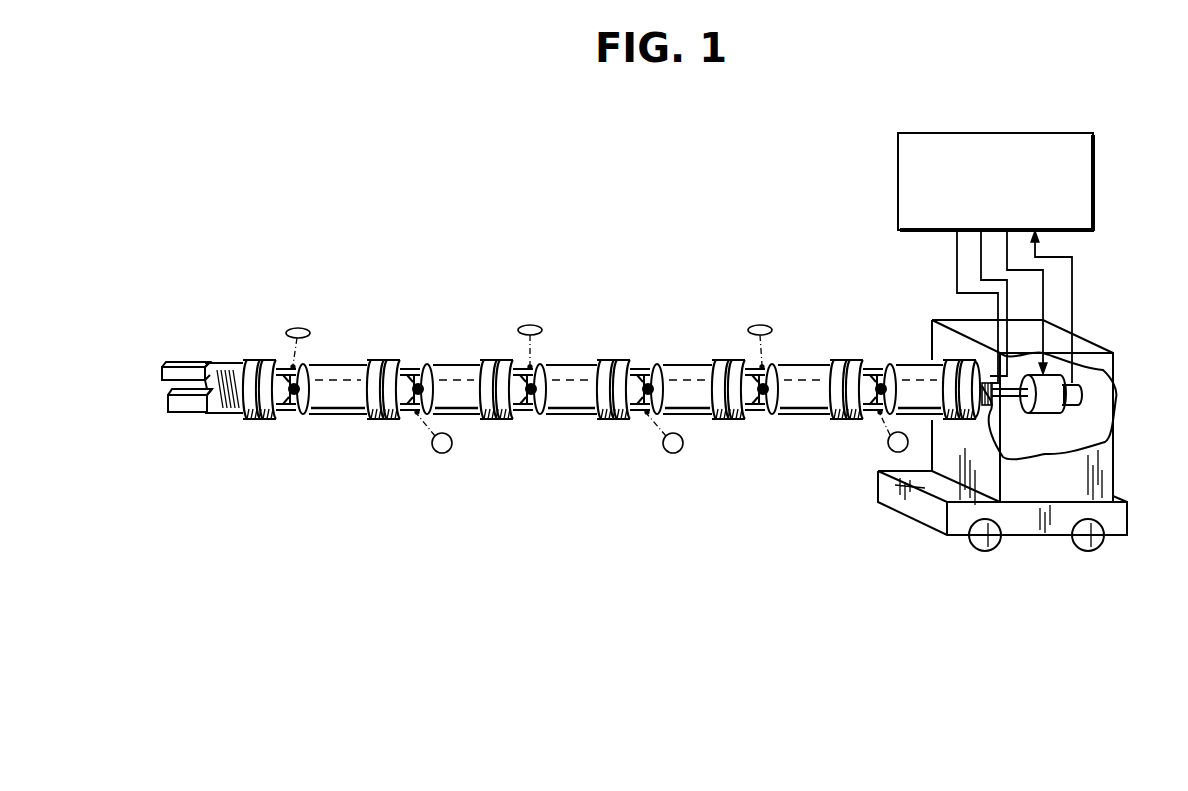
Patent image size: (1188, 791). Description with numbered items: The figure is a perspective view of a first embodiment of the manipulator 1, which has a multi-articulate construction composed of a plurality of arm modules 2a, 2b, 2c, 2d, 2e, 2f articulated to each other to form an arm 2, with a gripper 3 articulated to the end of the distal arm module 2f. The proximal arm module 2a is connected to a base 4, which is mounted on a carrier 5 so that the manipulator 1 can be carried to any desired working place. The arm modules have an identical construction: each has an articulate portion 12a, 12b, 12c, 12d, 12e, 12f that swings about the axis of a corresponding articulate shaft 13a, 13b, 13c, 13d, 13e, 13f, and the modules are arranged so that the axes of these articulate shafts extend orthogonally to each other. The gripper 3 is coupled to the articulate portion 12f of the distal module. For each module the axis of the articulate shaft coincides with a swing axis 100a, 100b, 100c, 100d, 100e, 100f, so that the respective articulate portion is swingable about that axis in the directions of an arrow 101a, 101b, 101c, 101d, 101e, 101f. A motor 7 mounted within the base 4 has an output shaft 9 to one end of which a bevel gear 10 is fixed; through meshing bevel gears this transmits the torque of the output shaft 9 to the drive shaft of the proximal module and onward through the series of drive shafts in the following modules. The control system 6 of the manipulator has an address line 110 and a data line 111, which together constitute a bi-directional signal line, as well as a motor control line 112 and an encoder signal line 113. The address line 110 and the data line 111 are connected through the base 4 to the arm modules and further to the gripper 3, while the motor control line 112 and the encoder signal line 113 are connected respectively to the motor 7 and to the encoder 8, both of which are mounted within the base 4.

The manipulator 1 is at (646, 258).
The arm 2 is at (565, 420).
The proximal arm module 2a is at (903, 373).
The arm module 2b is at (803, 373).
The arm module 2c is at (687, 375).
The arm module 2d is at (588, 373).
The arm module 2e is at (451, 372).
The distal arm module 2f is at (347, 377).
The gripper 3 is at (257, 368).
The base 4 is at (950, 452).
The carrier 5 is at (1025, 520).
The control system 6 is at (952, 145).
The motor 7 is at (1052, 411).
The encoder 8 is at (1080, 396).
The output shaft 9 is at (1007, 403).
The bevel gear 10 is at (982, 408).
The articulate portion 12a is at (868, 370).
The articulate portion 12b is at (745, 418).
The articulate portion 12c is at (644, 375).
The articulate portion 12d is at (515, 417).
The articulate portion 12e is at (400, 358).
The articulate portion 12f is at (288, 417).
The articulate shaft 13a is at (870, 408).
The articulate shaft 13b is at (755, 365).
The articulate shaft 13c is at (650, 407).
The articulate shaft 13d is at (528, 367).
The articulate shaft 13e is at (417, 406).
The articulate shaft 13f is at (293, 370).
The axis 100a is at (886, 447).
The axis 100b is at (770, 330).
The axis 100c is at (665, 450).
The axis 100d is at (538, 330).
The axis 100e is at (436, 450).
The axis 100f is at (308, 331).
The arrow 101a is at (882, 452).
The arrow 101b is at (752, 330).
The arrow 101c is at (668, 455).
The arrow 101d is at (520, 330).
The arrow 101e is at (437, 452).
The arrow 101f is at (290, 333).
The address line 110 is at (957, 250).
The data line 111 is at (981, 280).
The motor control line 112 is at (1043, 268).
The encoder signal line 113 is at (1072, 277).